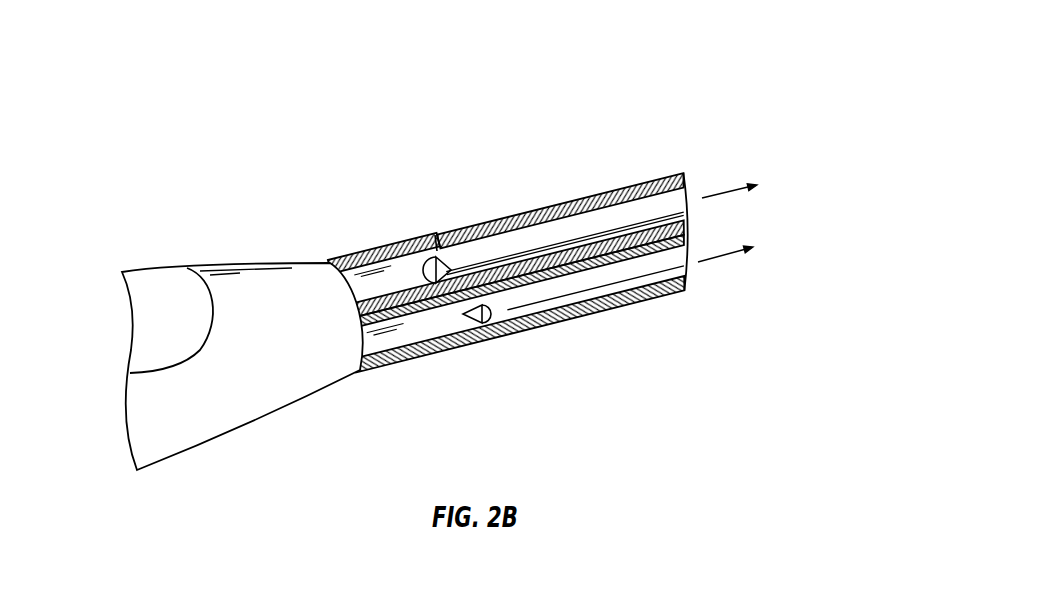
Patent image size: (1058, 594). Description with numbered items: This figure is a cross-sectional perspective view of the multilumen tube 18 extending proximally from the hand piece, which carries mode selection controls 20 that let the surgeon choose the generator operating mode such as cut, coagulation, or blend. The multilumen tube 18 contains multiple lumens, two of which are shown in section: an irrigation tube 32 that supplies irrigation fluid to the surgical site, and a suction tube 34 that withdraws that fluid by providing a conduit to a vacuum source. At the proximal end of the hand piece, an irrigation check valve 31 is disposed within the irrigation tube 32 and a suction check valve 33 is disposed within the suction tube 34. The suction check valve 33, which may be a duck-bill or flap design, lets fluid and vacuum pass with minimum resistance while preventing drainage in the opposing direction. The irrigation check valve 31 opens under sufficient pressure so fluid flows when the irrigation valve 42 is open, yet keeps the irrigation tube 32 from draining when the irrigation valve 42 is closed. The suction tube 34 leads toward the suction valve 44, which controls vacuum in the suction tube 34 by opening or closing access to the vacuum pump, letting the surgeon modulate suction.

The multilumen tube 18 is at (497, 210).
The mode selection controls 20 is at (147, 262).
The irrigation check valve 31 is at (482, 323).
The irrigation tube 32 is at (606, 308).
The suction check valve 33 is at (436, 257).
The suction tube 34 is at (634, 188).
The irrigation valve 42 is at (805, 276).
The suction valve 44 is at (791, 156).